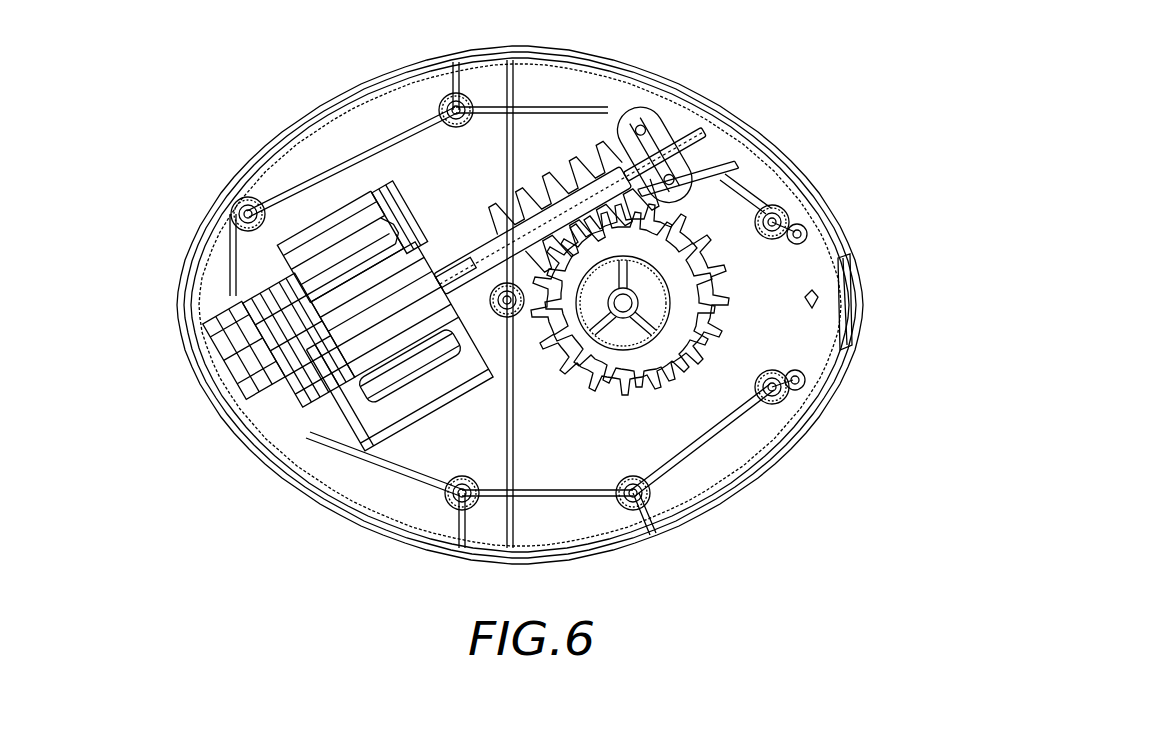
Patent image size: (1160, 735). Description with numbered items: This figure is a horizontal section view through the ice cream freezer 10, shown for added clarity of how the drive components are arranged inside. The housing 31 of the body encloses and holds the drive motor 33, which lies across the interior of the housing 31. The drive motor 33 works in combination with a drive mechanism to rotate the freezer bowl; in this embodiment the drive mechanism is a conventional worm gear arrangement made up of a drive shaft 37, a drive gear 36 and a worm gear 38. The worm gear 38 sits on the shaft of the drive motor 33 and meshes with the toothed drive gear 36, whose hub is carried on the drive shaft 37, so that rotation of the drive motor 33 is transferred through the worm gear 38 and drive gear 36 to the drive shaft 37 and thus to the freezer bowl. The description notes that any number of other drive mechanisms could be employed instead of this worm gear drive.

The device assembly 10 is at (890, 106).
The housing 31 is at (262, 148).
The drive motor 33 is at (357, 335).
The drive gear 36 is at (676, 272).
The drive shaft 37 is at (630, 305).
The worm gear 38 is at (608, 157).